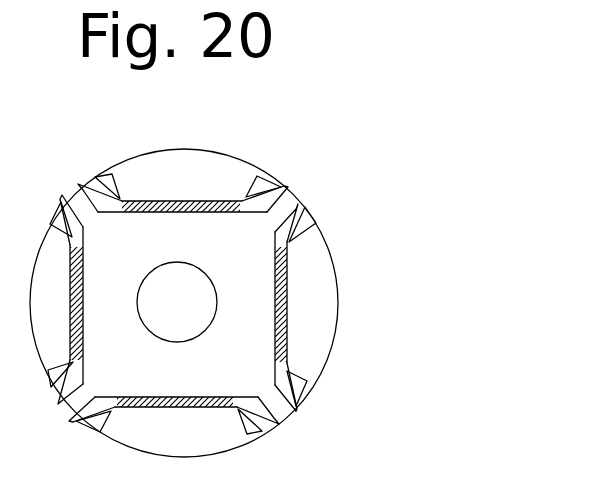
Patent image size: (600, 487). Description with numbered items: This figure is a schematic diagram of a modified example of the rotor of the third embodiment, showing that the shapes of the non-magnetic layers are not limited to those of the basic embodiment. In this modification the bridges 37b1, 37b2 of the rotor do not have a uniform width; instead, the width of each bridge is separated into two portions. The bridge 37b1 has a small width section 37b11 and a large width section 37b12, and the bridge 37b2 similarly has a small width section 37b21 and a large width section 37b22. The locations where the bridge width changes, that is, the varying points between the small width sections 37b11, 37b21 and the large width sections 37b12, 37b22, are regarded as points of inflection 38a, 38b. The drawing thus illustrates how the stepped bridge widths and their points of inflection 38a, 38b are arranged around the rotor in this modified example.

The bridge 37b1 is at (261, 176).
The bridge 37b2 is at (285, 191).
The small width section 37b11 is at (295, 403).
The large width section 37b12 is at (303, 397).
The small width section 37b21 is at (303, 394).
The large width section 37b22 is at (303, 381).
The point of inflection 38a is at (306, 203).
The point of inflection 38b is at (231, 303).